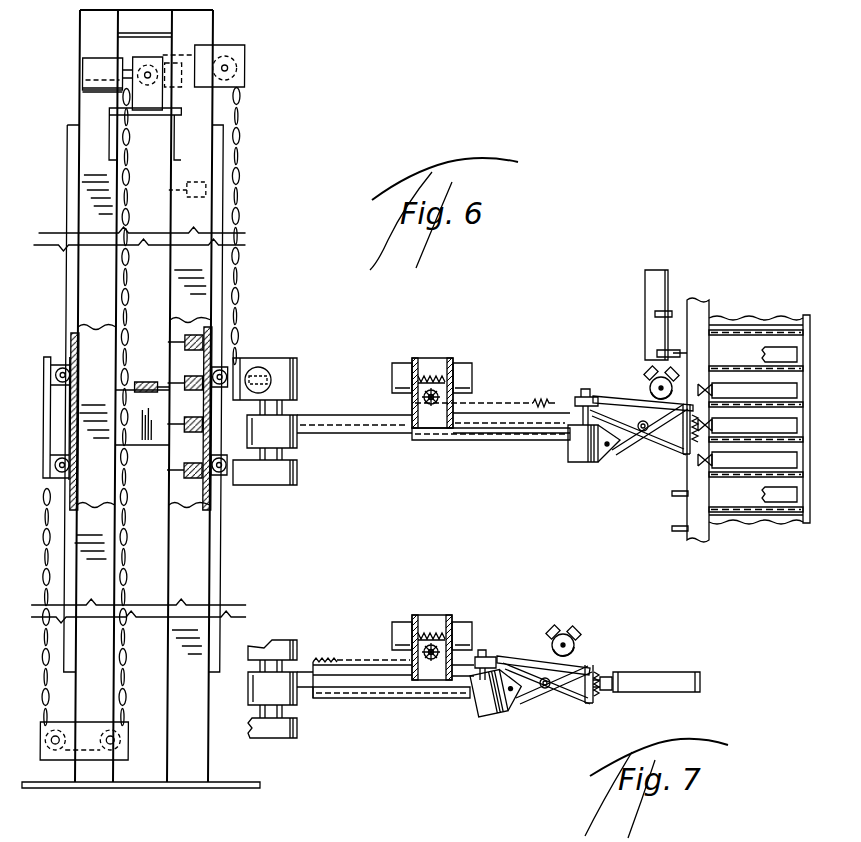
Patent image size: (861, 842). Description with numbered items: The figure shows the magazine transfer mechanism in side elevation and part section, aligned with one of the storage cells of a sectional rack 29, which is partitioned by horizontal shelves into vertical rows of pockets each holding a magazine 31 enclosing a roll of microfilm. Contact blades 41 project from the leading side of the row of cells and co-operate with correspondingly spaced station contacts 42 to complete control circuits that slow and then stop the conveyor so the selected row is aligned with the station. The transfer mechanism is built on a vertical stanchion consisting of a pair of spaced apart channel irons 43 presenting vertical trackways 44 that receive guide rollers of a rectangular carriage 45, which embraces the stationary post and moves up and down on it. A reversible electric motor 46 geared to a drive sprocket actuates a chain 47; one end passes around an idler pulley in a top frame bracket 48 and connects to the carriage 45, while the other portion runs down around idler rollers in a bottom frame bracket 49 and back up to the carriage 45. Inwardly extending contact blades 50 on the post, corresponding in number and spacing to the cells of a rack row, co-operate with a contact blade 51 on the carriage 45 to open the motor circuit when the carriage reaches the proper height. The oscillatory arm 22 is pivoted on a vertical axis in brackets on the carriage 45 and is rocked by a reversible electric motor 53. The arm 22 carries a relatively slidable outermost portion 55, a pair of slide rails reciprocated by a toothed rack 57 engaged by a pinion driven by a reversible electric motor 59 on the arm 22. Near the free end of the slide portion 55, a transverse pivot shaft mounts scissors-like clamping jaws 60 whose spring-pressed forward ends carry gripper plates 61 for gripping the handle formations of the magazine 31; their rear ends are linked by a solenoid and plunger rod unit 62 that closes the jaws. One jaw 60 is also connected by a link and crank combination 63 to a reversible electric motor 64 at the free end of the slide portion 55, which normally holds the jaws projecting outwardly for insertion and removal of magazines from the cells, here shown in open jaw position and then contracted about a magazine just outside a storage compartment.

In FIG. 6, the oscillatory arm 22 is at (373, 425).
In FIG. 7, the oscillatory arm 22 is at (360, 680).
In FIG. 6, the sectional rack 29 is at (775, 316).
In FIG. 6, the magazine 31 is at (740, 420).
In FIG. 7, the magazine 31 is at (665, 672).
In FIG. 6, the contact blades 41 is at (672, 528).
In FIG. 6, the station contacts 42 is at (672, 330).
In FIG. 6, the channel irons 43 is at (178, 760).
In FIG. 6, the vertical trackways 44 is at (68, 170).
In FIG. 6, the carriage 45 is at (253, 366).
In FIG. 6, the reversible electric motor 46 is at (86, 75).
In FIG. 6, the chain 47 is at (244, 143).
In FIG. 6, the top frame bracket 48 is at (245, 58).
In FIG. 6, the bottom frame bracket 49 is at (92, 762).
In FIG. 6, the contact blades 50 is at (172, 300).
In FIG. 6, the contact blade 51 is at (167, 383).
In FIG. 6, the reversible electric motor 53 is at (268, 370).
In FIG. 6, the outermost slide portion 55 is at (495, 440).
In FIG. 7, the outermost slide portion 55 is at (395, 690).
In FIG. 6, the toothed rack 57 is at (520, 400).
In FIG. 6, the reversible electric motor 59 is at (400, 362).
In FIG. 7, the reversible electric motor 59 is at (400, 620).
In FIG. 6, the clamping jaws 60 is at (655, 443).
In FIG. 7, the clamping jaws 60 is at (568, 692).
In FIG. 7, the gripper plates 61 is at (606, 676).
In FIG. 6, the solenoid and plunger rod unit 62 is at (583, 463).
In FIG. 7, the solenoid and plunger rod unit 62 is at (490, 708).
In FIG. 6, the link and crank combination 63 is at (630, 397).
In FIG. 7, the link and crank combination 63 is at (530, 665).
In FIG. 6, the reversible electric motor 64 is at (654, 372).
In FIG. 7, the reversible electric motor 64 is at (563, 630).